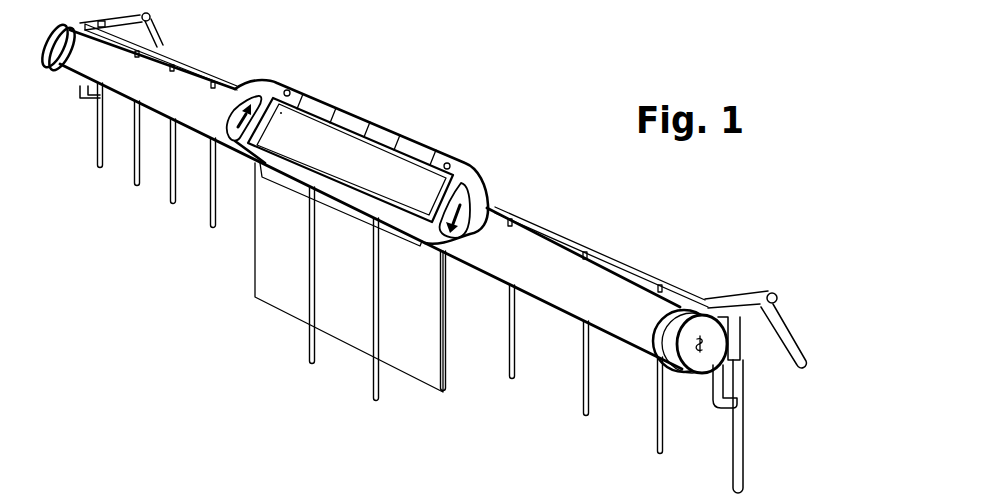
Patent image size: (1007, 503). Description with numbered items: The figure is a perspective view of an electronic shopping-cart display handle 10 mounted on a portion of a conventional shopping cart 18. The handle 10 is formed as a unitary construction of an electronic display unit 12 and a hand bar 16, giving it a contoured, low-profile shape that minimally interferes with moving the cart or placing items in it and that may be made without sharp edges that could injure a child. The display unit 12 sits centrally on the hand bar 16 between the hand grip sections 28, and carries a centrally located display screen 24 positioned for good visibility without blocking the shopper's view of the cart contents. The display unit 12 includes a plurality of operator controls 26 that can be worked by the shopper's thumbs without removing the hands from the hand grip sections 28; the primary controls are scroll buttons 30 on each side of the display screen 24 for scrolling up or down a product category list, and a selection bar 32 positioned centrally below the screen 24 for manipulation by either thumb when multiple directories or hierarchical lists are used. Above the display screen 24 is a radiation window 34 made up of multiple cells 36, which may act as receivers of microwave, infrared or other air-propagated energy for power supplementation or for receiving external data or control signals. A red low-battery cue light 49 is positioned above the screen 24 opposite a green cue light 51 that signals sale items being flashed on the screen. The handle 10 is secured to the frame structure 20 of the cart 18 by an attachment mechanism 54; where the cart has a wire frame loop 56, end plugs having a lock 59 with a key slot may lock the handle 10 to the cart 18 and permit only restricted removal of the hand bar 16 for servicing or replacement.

The electronic shopping-cart display handle 10 is at (276, 84).
The electronic display unit 12 is at (477, 192).
The hand bar 16 is at (548, 258).
The shopping cart 18 is at (774, 297).
The frame structure 20 is at (743, 440).
The display screen 24 is at (314, 130).
The operator controls 26 is at (509, 214).
The hand grip sections 28 is at (621, 277).
The scroll buttons 30 is at (450, 245).
The selection bar 32 is at (327, 207).
The radiation window 34 is at (383, 125).
The cells 36 is at (424, 141).
The low-battery cue light 49 is at (451, 166).
The cue light 51 is at (292, 91).
The attachment mechanism 54 is at (719, 371).
The wire frame loop 56 is at (723, 312).
The lock 59 is at (708, 346).